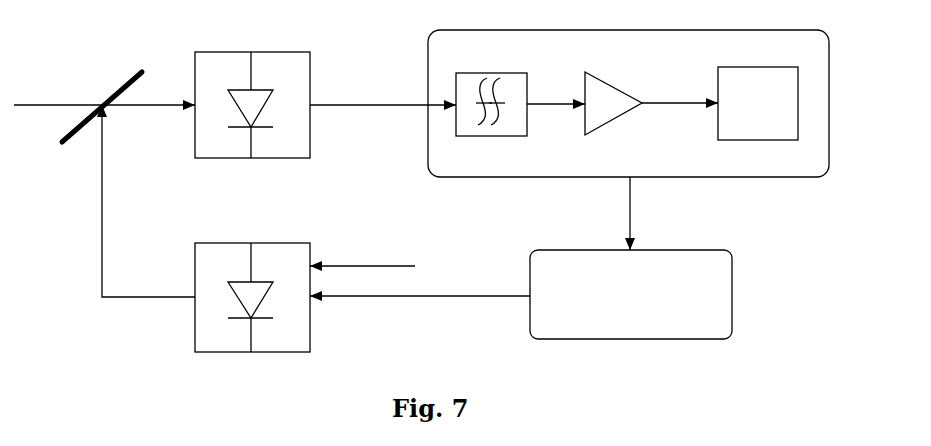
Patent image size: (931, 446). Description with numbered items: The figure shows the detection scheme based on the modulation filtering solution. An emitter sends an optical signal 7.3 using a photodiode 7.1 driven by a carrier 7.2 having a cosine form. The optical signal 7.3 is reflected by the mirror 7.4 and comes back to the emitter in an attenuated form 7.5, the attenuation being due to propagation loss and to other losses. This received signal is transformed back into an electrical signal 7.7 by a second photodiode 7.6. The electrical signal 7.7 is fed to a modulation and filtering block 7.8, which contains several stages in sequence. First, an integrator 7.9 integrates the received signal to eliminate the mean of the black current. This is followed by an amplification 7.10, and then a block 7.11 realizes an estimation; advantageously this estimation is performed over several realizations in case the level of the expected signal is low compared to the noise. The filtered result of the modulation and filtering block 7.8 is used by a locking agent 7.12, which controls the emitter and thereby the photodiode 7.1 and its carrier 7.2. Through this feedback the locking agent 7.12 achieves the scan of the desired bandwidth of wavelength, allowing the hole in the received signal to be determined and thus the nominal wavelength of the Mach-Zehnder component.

The photodiode 7.1 is at (296, 269).
The carrier 7.2 is at (385, 265).
The optical signal 7.3 is at (102, 280).
The mirror 7.4 is at (122, 83).
The attenuated form 7.5 is at (135, 107).
The photodiode 7.6 is at (293, 78).
The electrical signal 7.7 is at (370, 103).
The modulation and filtering block 7.8 is at (680, 164).
The integrator 7.9 is at (505, 73).
The amplification 7.10 is at (622, 92).
The block 7.11 is at (768, 96).
The locking agent 7.12 is at (575, 277).